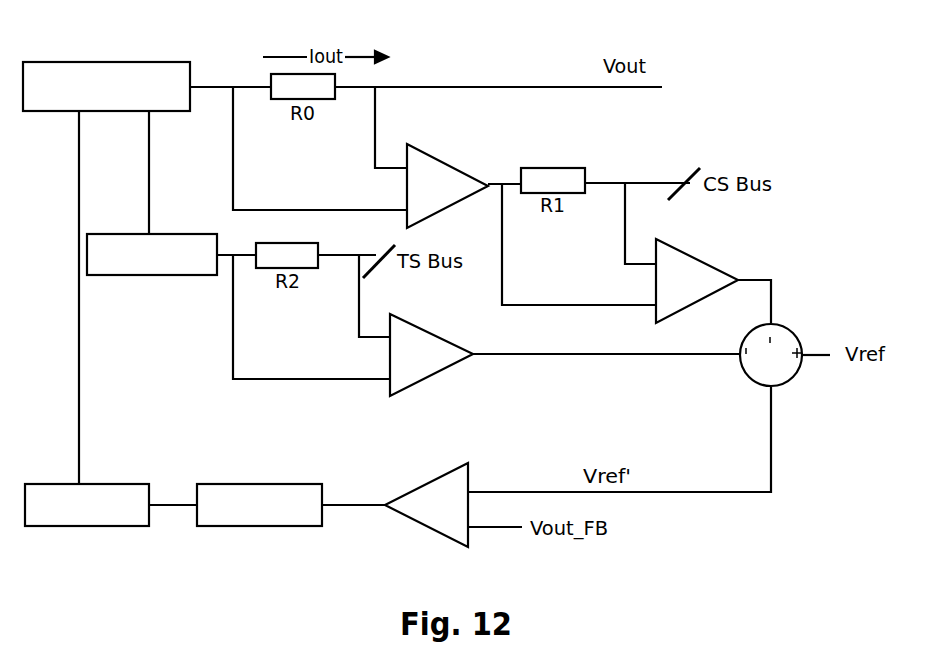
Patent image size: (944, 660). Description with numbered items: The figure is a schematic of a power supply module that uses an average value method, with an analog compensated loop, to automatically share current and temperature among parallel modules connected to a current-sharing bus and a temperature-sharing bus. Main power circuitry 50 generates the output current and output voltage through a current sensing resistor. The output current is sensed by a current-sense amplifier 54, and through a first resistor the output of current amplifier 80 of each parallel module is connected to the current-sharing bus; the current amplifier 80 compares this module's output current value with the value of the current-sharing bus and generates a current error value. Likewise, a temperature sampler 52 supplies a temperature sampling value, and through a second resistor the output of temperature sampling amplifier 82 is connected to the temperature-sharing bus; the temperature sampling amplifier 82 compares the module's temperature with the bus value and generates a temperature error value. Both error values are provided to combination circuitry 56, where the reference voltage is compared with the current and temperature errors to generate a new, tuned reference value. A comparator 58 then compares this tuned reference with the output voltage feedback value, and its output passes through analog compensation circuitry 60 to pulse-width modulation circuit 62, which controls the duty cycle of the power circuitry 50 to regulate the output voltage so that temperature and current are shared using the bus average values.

The main power circuitry 50 is at (148, 60).
The temperature sampler 52 is at (167, 276).
The current-sense amplifier 54 is at (435, 154).
The combination circuitry 56 is at (795, 333).
The comparator 58 is at (411, 491).
The analog compensation circuitry 60 is at (227, 483).
The pulse-width modulation circuit 62 is at (120, 527).
The current amplifier 80 is at (718, 266).
The temperature sampling amplifier 82 is at (426, 380).